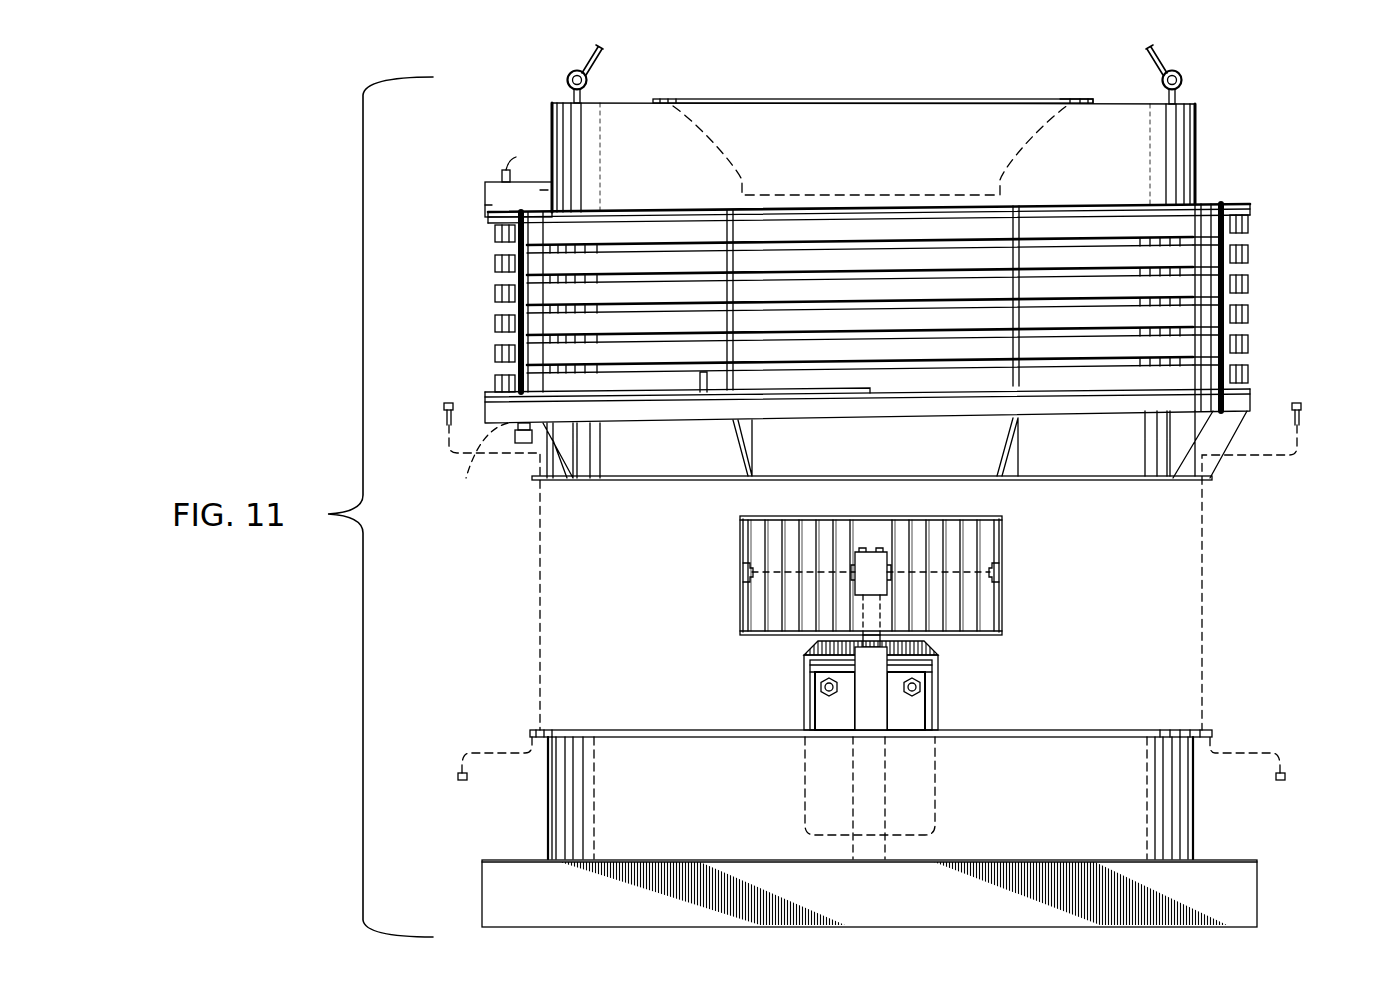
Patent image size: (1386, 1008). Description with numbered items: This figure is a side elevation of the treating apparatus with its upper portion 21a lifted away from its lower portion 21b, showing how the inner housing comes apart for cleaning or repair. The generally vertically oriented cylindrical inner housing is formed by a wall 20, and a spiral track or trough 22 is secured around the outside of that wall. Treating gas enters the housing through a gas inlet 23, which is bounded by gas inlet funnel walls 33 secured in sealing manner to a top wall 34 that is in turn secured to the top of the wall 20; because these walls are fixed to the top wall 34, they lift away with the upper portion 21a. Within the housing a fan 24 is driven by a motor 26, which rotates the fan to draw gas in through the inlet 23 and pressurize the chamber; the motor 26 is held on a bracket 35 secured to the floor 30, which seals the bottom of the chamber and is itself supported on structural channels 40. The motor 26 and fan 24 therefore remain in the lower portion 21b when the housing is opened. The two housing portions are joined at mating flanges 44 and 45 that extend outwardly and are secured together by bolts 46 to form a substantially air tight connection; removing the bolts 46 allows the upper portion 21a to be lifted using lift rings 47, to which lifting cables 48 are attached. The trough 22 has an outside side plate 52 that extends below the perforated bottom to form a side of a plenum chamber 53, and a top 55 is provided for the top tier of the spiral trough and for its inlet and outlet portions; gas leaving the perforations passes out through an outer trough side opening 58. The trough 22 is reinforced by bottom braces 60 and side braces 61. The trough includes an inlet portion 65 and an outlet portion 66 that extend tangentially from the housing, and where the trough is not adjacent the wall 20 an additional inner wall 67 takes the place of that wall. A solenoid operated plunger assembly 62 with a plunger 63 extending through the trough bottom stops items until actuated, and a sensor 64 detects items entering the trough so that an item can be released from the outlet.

The wall 20 is at (1197, 135).
The upper portion 21a is at (1270, 222).
The lower portion 21b is at (1212, 808).
The spiral track or trough 22 is at (1250, 322).
The gas inlet 23 is at (900, 147).
The fan 24 is at (1002, 547).
The motor 26 is at (938, 698).
The floor 30 is at (722, 859).
The gas inlet funnel walls 33 is at (1017, 100).
The top wall 34 is at (1093, 103).
The bracket 35 is at (858, 706).
The structural channels 40 is at (1258, 898).
The mating flange 44 is at (1212, 480).
The mating flange 45 is at (1212, 733).
The bolts 46 is at (444, 410).
The lift rings 47 is at (566, 82).
The lifting cables 48 is at (597, 60).
The outside side plate 52 is at (495, 295).
The plenum chamber 53 is at (480, 199).
The top 55 is at (1240, 205).
The outer trough side opening 58 is at (1250, 264).
The bottom braces 60 is at (1175, 437).
The side braces 61 is at (1020, 245).
The solenoid operated plunger assembly 62 is at (524, 443).
The plunger 63 is at (475, 464).
The sensor 64 is at (500, 170).
The inlet portion 65 is at (485, 190).
The outlet portion 66 is at (485, 392).
The inner wall 67 is at (537, 193).